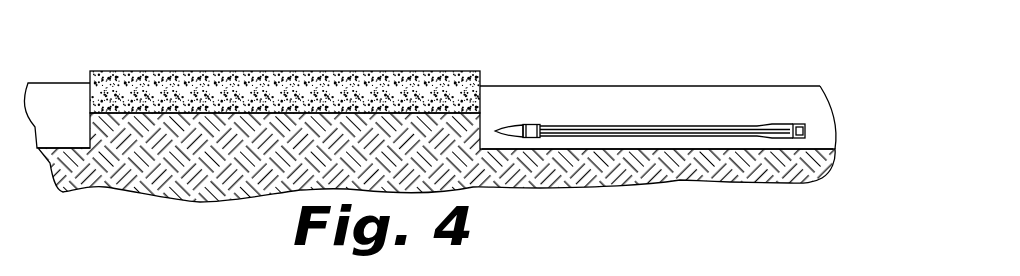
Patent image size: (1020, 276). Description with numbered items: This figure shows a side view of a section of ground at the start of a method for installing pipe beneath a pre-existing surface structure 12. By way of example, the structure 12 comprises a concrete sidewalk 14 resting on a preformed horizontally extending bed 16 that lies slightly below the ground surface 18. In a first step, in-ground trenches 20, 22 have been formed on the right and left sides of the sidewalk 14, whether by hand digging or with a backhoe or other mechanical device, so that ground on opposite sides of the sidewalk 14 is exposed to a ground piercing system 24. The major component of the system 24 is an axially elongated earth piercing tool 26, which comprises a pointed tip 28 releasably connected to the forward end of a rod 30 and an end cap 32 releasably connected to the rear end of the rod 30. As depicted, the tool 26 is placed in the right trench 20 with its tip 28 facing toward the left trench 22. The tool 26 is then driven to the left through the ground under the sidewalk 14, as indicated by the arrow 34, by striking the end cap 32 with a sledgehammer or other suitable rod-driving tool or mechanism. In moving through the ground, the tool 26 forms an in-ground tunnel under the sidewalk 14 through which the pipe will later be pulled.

The pre-existing surface structure 12 is at (152, 70).
The concrete sidewalk 14 is at (207, 72).
The bed 16 is at (465, 137).
The ground surface 18 is at (622, 86).
The trench 20 is at (682, 86).
The trench 22 is at (50, 90).
The ground piercing system 24 is at (787, 113).
The earth piercing tool 26 is at (663, 140).
The pointed tip 28 is at (512, 127).
The rod 30 is at (623, 128).
The end cap 32 is at (802, 127).
The arrow 34 is at (818, 132).